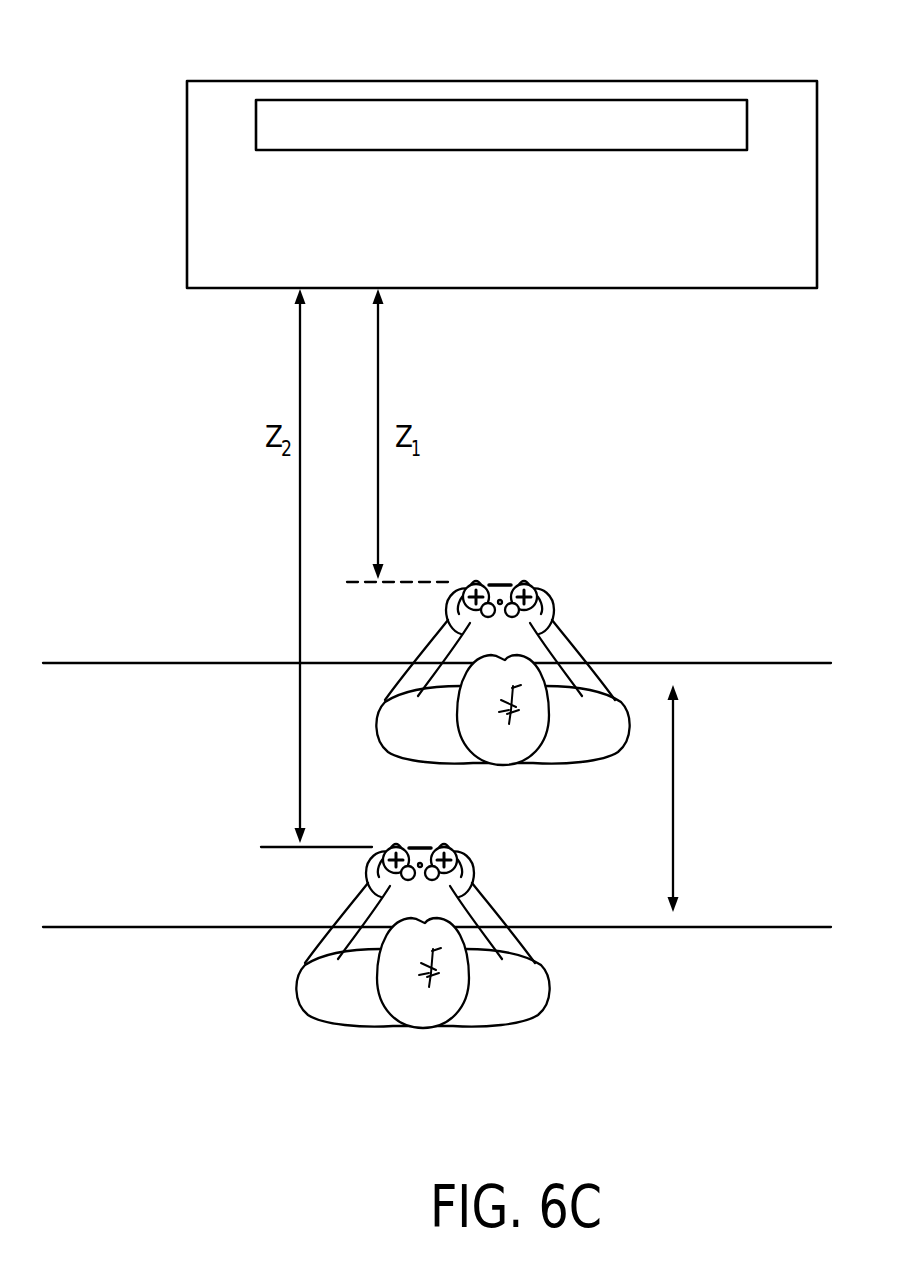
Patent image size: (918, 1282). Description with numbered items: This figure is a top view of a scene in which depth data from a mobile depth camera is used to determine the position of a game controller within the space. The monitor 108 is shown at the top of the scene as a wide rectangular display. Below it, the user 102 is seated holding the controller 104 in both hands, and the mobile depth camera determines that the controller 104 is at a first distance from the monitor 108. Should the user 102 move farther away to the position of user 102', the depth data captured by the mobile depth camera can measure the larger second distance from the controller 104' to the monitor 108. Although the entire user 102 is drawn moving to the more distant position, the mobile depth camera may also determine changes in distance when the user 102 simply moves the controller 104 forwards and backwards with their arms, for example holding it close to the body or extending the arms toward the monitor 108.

The monitor 108 is at (612, 120).
The controller 104 is at (512, 559).
The controller 104' is at (437, 828).
The user 102 is at (476, 689).
The user 102' is at (424, 973).